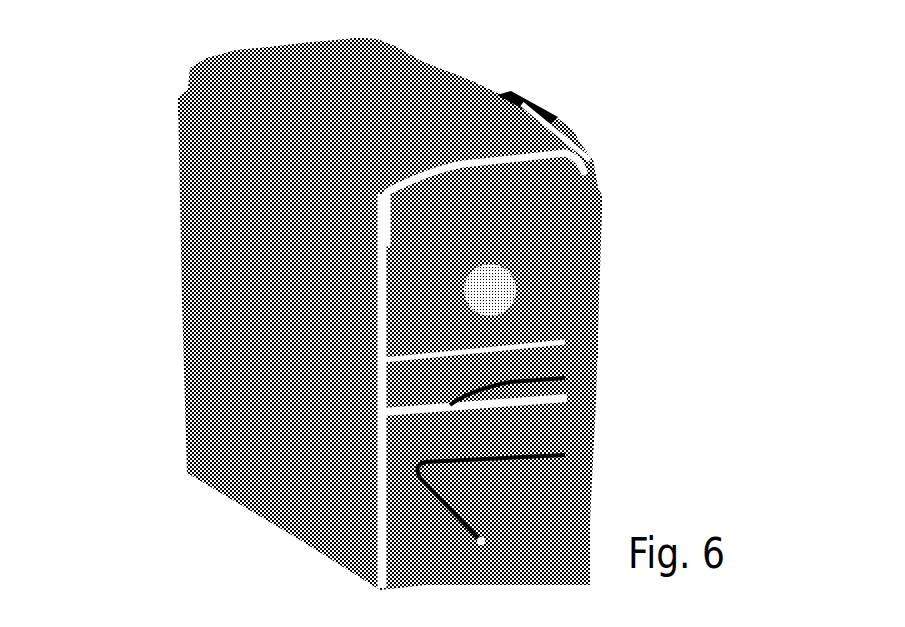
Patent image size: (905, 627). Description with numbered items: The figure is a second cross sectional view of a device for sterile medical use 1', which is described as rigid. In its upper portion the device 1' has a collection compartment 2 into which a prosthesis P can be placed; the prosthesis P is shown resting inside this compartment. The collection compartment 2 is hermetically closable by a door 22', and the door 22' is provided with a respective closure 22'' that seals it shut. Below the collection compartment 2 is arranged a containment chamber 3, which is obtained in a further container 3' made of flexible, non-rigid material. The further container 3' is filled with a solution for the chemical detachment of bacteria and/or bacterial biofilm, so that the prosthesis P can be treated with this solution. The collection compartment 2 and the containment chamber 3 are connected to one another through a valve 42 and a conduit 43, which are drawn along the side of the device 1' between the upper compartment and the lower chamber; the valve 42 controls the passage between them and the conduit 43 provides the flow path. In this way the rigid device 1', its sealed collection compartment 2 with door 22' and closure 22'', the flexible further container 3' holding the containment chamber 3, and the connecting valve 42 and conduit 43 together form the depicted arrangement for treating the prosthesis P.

The device for sterile medical use 1' is at (315, 314).
The door 22' is at (388, 106).
The closure 22'' is at (564, 89).
The collection compartment 2 is at (541, 243).
The prosthesis P is at (495, 299).
The valve 42 is at (582, 300).
The containment chamber 3 is at (427, 468).
The further container 3' is at (366, 397).
The conduit 43 is at (568, 442).